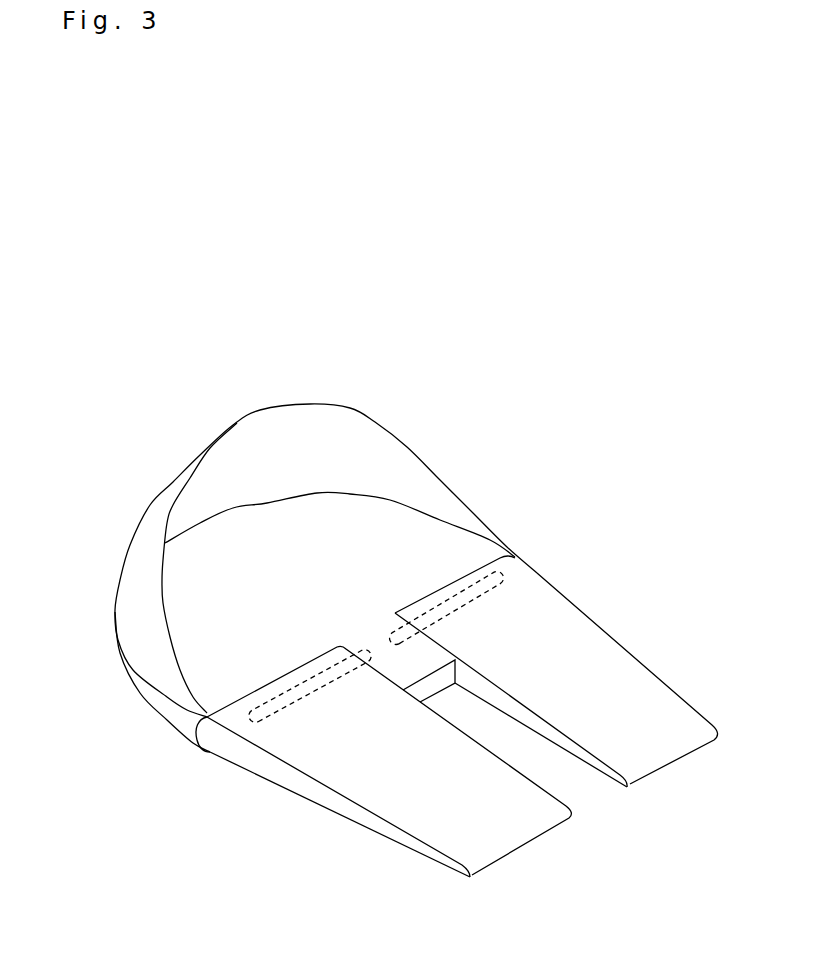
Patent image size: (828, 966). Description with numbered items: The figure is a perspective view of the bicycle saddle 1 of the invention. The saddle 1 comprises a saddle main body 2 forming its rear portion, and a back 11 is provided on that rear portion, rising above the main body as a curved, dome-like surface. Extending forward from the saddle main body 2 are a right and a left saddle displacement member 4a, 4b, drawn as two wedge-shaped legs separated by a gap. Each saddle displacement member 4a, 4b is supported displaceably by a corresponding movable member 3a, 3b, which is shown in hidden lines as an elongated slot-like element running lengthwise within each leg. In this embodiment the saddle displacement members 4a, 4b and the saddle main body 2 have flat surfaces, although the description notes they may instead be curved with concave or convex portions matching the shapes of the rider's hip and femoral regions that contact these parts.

The saddle 1 is at (483, 516).
The back 11 is at (322, 430).
The saddle main body 2 is at (380, 527).
The movable member 3a is at (250, 716).
The movable member 3b is at (503, 576).
The saddle displacement member 4a is at (363, 777).
The saddle displacement member 4b is at (593, 675).